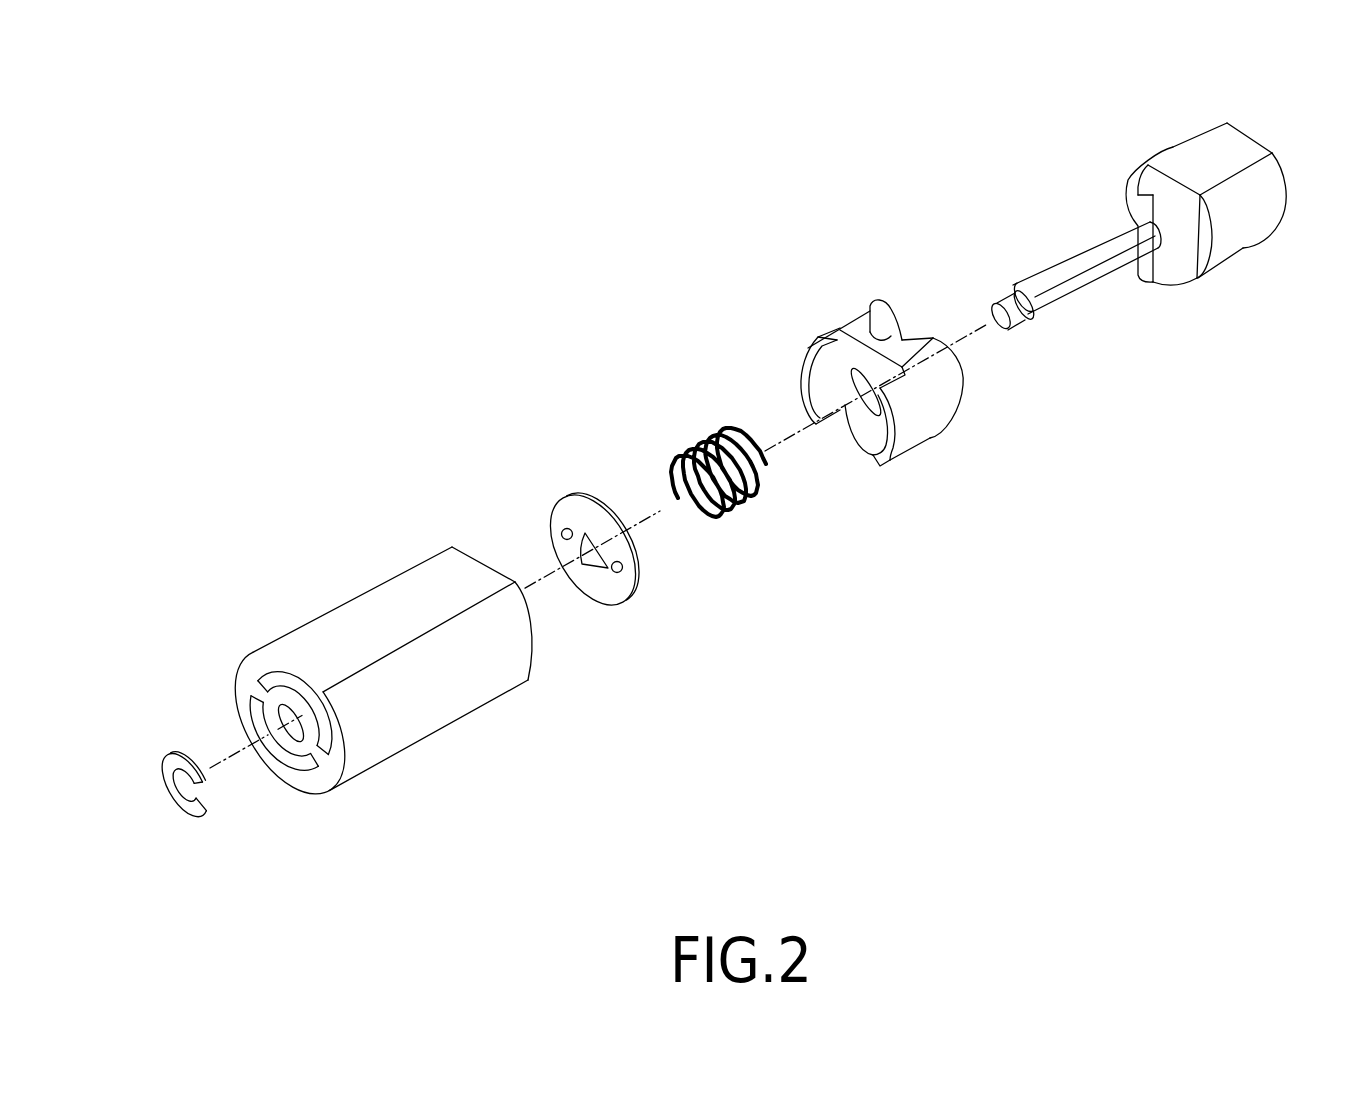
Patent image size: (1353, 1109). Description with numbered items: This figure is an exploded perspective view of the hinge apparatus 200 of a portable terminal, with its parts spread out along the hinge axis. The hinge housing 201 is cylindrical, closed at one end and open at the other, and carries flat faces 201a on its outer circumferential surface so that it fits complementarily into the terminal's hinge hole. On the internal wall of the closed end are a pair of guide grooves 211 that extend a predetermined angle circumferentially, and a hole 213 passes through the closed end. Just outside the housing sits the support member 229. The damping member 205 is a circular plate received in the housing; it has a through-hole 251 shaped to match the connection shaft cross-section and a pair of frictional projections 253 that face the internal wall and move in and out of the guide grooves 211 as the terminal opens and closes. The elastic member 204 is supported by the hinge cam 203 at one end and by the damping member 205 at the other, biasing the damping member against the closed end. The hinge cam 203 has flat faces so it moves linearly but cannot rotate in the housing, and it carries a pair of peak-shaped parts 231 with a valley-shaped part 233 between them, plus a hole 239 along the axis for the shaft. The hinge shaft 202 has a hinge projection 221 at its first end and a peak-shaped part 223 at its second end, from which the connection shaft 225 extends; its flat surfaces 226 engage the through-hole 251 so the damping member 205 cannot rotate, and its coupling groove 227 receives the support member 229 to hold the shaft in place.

The hinge apparatus 200 is at (583, 199).
The hinge housing 201 is at (343, 595).
The flat faces 201a is at (423, 583).
The guide grooves 211 is at (262, 682).
The hole 213 is at (295, 727).
The support member 229 is at (173, 795).
The damping member 205 is at (653, 582).
The through-hole 251 is at (598, 570).
The frictional projections 253 is at (565, 530).
The elastic member 204 is at (733, 518).
The hinge cam 203 is at (915, 458).
The peak-shaped parts 231 is at (957, 403).
The valley-shaped part 233 is at (883, 335).
The hole 239 is at (868, 388).
The hinge shaft 202 is at (1262, 265).
The hinge projection 221 is at (1238, 145).
The peak-shaped part 223 is at (1140, 202).
The connection shaft 225 is at (1085, 280).
The flat surfaces 226 is at (1066, 271).
The coupling groove 227 is at (1033, 318).